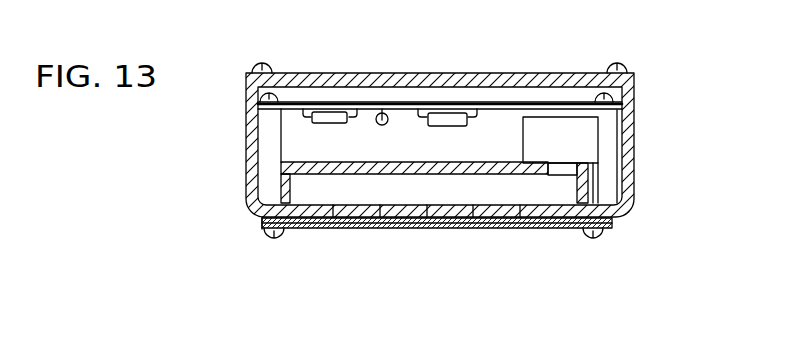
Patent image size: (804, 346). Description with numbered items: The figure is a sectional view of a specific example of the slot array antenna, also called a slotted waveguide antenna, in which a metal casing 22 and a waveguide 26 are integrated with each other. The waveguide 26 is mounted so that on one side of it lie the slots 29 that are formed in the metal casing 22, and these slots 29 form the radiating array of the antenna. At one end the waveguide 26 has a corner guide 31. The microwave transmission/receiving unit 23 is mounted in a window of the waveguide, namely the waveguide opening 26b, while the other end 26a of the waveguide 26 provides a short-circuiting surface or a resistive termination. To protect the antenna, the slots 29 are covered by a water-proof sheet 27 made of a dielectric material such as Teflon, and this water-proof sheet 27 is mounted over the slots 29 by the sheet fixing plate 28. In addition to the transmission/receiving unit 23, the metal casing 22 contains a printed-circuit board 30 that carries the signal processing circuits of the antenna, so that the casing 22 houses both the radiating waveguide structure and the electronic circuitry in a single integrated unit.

The metal casing 22 is at (635, 148).
The microwave transmission/receiving unit 23 is at (523, 145).
The waveguide 26 is at (412, 162).
The other end of the waveguide 26a is at (281, 176).
The waveguide opening 26b is at (563, 173).
The water-proof sheet 27 is at (262, 221).
The sheet fixing plate 28 is at (294, 226).
The slots 29 is at (430, 212).
The printed-circuit board 30 is at (473, 103).
The corner guide 31 is at (572, 228).